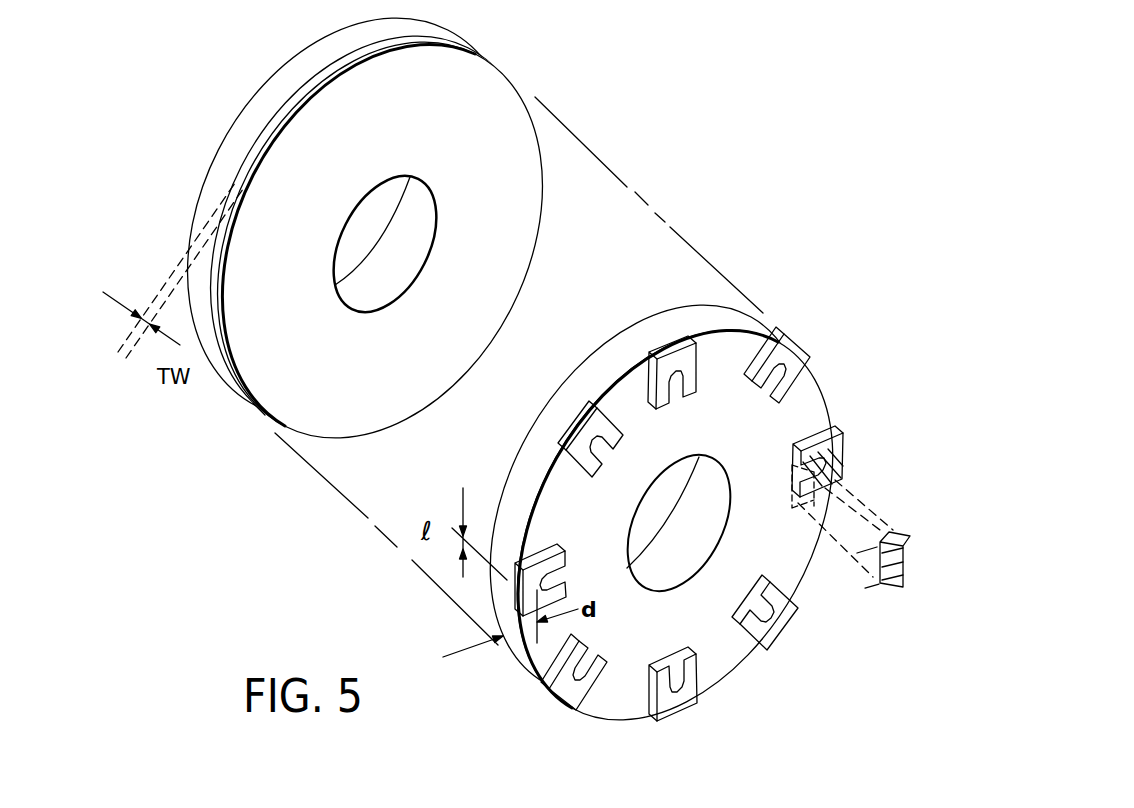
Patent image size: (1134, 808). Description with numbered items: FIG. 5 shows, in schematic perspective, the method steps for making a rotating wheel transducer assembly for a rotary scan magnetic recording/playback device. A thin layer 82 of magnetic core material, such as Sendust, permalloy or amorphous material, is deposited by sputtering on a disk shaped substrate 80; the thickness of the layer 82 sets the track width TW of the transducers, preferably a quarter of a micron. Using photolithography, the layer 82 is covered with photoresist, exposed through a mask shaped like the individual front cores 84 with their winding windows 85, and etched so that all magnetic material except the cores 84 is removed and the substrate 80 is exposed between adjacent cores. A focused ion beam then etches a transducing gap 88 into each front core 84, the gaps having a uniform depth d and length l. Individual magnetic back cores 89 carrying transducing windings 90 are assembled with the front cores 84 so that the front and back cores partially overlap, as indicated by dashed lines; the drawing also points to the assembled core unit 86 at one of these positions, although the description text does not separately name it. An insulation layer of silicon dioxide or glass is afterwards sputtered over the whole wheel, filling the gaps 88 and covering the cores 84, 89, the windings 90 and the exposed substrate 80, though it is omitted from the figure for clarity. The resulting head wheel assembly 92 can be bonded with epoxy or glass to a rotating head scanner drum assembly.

The substrate 80 is at (302, 75).
The thin layer of magnetic core material 82 is at (483, 90).
The front core 84 is at (843, 447).
The winding window 85 is at (603, 452).
The clip assembly 86 is at (880, 465).
The transducing gap 88 is at (668, 345).
The back core 89 is at (893, 521).
The transducing windings 90 is at (866, 588).
The head wheel assembly 92 is at (822, 330).